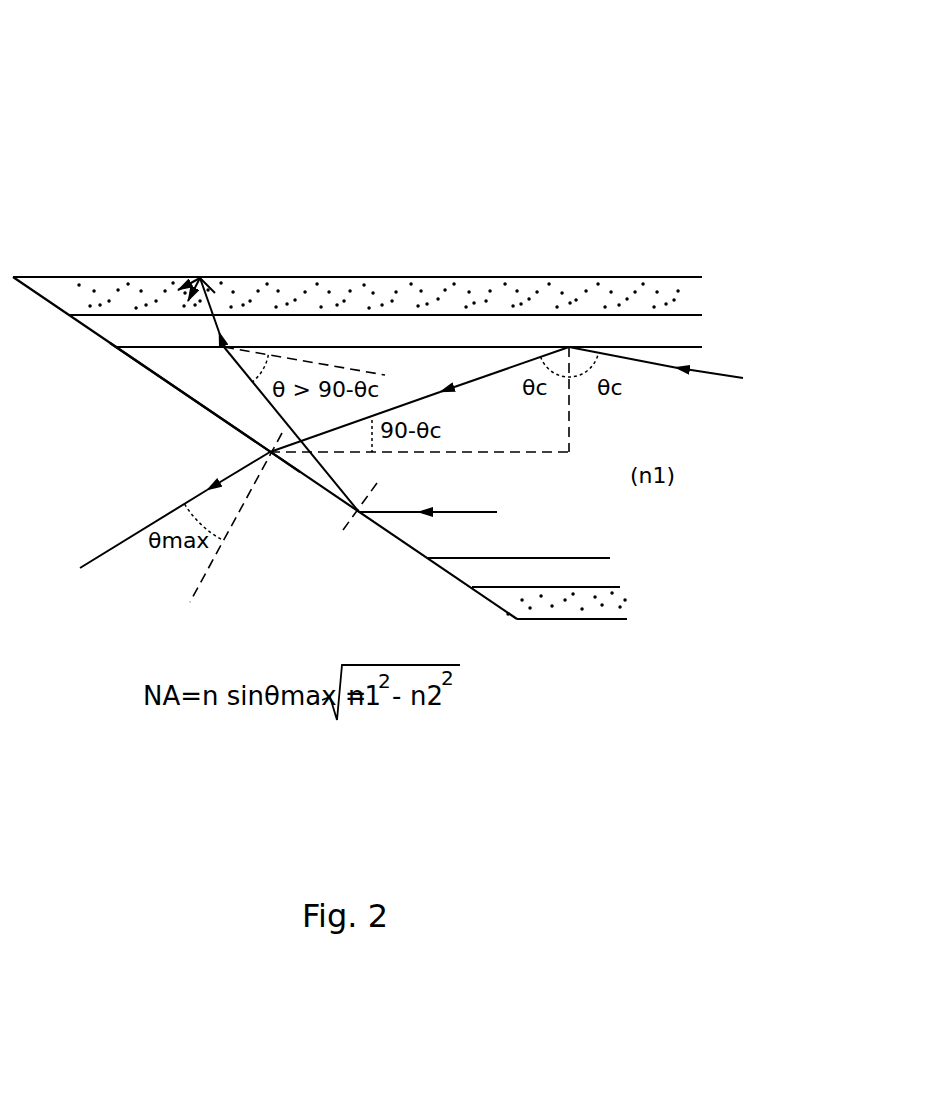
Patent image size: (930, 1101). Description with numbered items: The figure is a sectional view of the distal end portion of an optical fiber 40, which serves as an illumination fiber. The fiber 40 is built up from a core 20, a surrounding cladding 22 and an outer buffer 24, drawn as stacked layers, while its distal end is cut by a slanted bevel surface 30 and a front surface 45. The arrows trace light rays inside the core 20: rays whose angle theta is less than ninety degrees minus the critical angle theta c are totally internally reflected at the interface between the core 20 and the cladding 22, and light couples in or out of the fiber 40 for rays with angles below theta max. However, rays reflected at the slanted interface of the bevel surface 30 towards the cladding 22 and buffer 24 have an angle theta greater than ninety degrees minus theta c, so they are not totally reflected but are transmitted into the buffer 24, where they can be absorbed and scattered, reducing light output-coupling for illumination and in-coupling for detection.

The core 20 is at (577, 512).
The cladding 22 is at (518, 328).
The buffer 24 is at (403, 292).
The bevel surface 30 is at (40, 296).
The optical fiber 40 is at (249, 185).
The front surface 45 is at (155, 373).